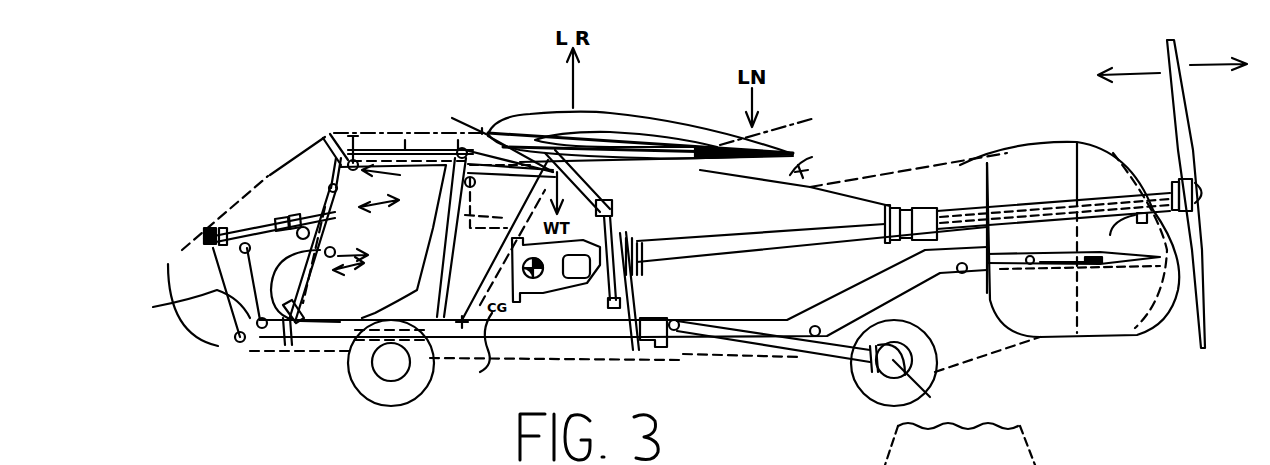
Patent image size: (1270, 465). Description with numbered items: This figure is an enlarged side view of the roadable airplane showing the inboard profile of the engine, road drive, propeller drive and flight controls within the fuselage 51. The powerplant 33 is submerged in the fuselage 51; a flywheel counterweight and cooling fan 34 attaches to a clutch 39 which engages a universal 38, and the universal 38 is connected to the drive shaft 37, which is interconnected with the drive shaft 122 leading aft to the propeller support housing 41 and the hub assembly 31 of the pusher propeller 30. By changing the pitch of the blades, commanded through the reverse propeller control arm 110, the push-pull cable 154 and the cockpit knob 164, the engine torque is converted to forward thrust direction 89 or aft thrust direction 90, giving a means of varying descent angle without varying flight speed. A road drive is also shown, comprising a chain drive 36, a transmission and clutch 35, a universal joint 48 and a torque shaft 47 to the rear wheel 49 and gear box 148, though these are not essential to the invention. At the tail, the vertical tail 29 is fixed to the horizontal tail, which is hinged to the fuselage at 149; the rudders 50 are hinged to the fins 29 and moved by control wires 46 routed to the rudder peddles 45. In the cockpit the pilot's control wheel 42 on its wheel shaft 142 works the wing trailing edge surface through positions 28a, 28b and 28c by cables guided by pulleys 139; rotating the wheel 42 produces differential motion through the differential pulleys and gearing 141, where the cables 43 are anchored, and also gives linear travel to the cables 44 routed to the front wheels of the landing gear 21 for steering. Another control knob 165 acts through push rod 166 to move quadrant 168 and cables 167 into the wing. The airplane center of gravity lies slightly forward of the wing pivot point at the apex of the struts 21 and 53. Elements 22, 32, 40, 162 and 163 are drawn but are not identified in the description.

The landing gear 21 is at (406, 388).
The fuselage keel frame 22 is at (645, 353).
The ailerator position 28a is at (770, 141).
The ailerator position 28b is at (795, 150).
The ailerator position 28c is at (665, 176).
The vertical tail 29 is at (1043, 150).
The pusher propeller 30 is at (1186, 98).
The hub assembly 31 is at (1185, 183).
The fairing upper line 32 is at (970, 160).
The powerplant 33 is at (553, 290).
The flywheel counterweight and cooling fan 34 is at (612, 204).
The transmission and clutch 35 is at (673, 352).
The chain drive 36 is at (665, 303).
The drive shaft 37 is at (815, 243).
The universal 38 is at (645, 237).
The clutch 39 is at (630, 237).
The shaft coupling 40 is at (880, 215).
The propeller support housing 41 is at (1035, 205).
The pilot's control wheel 42 is at (305, 205).
The cables 43 is at (230, 338).
The cables 44 is at (168, 308).
The rudder peddles 45 is at (280, 345).
The control wires 46 is at (932, 280).
The torque shaft 47 is at (795, 362).
The universal joint 48 is at (680, 322).
The rear wheel 49 is at (858, 388).
The rudders 50 is at (1135, 335).
The fuselage 51 is at (812, 164).
The strut 53 is at (650, 283).
The forward thrust direction 89 is at (1140, 72).
The aft thrust direction 90 is at (1195, 65).
The reverse propeller control arm 110 is at (1139, 223).
The drive shaft 122 is at (968, 205).
The pulleys 139 is at (268, 185).
The differential pulleys and gearing 141 is at (272, 218).
The wheel shaft 142 is at (305, 215).
The gear box 148 is at (925, 380).
The hinge 149 is at (1032, 264).
The push-pull cable 154 is at (1015, 256).
The control motion arrow 162 is at (406, 179).
The control motion arrow 163 is at (370, 262).
The knob 164 is at (364, 248).
The control knob 165 is at (357, 162).
The push rod 166 is at (413, 133).
The cables 167 is at (487, 134).
The quadrant 168 is at (463, 149).